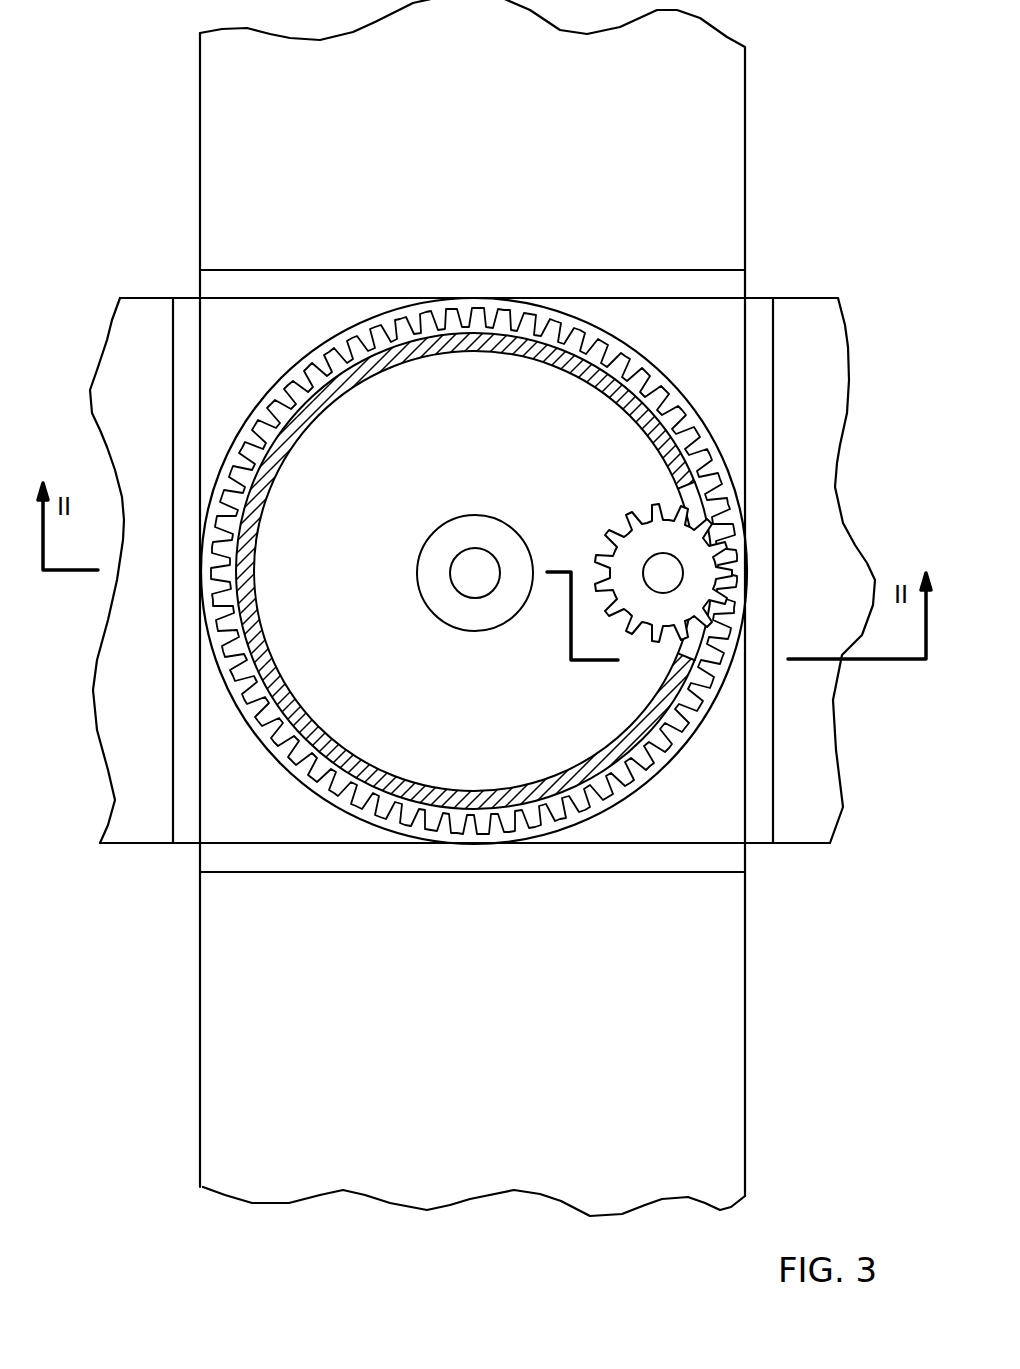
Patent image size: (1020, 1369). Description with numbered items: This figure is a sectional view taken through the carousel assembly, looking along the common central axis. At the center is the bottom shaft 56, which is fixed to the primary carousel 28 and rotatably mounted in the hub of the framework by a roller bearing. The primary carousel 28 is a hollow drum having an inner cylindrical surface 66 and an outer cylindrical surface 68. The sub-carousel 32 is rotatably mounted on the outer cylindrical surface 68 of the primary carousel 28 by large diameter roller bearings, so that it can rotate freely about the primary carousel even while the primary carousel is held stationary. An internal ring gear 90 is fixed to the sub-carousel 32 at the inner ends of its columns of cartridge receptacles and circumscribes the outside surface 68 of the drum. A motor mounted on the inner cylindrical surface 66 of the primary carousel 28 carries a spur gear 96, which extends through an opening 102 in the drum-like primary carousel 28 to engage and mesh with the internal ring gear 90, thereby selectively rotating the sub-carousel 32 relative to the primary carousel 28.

The primary carousel 28 is at (302, 697).
The sub-carousel 32 is at (749, 1031).
The bottom shaft 56 is at (462, 547).
The inner cylindrical surface 66 is at (258, 585).
The outer cylindrical surface 68 is at (312, 749).
The internal ring gear 90 is at (640, 358).
The spur gear 96 is at (613, 530).
The opening 102 is at (682, 498).